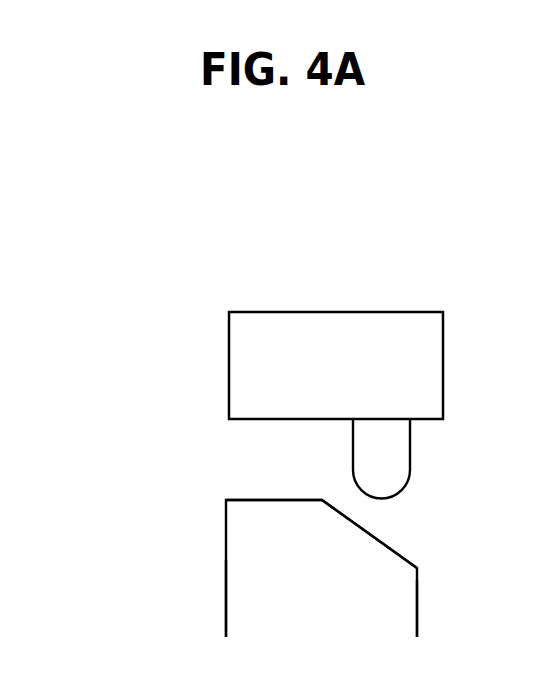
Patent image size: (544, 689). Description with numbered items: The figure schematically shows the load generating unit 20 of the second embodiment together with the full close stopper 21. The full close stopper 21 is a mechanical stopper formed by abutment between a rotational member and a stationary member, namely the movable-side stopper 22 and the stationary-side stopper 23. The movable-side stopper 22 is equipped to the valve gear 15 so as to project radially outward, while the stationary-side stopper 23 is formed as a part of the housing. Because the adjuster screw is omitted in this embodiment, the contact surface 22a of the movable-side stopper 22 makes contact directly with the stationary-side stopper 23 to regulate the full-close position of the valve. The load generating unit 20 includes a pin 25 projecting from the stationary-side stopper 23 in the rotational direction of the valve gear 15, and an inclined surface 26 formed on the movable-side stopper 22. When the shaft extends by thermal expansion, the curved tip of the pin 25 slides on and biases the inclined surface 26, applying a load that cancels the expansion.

The valve gear 15 is at (280, 610).
The load generating unit 20 is at (458, 452).
The full close stopper 21 is at (133, 333).
The movable-side stopper 22 is at (235, 568).
The contact surface 22a is at (272, 498).
The stationary-side stopper 23 is at (242, 365).
The pin 25 is at (395, 460).
The inclined surface 26 is at (377, 538).